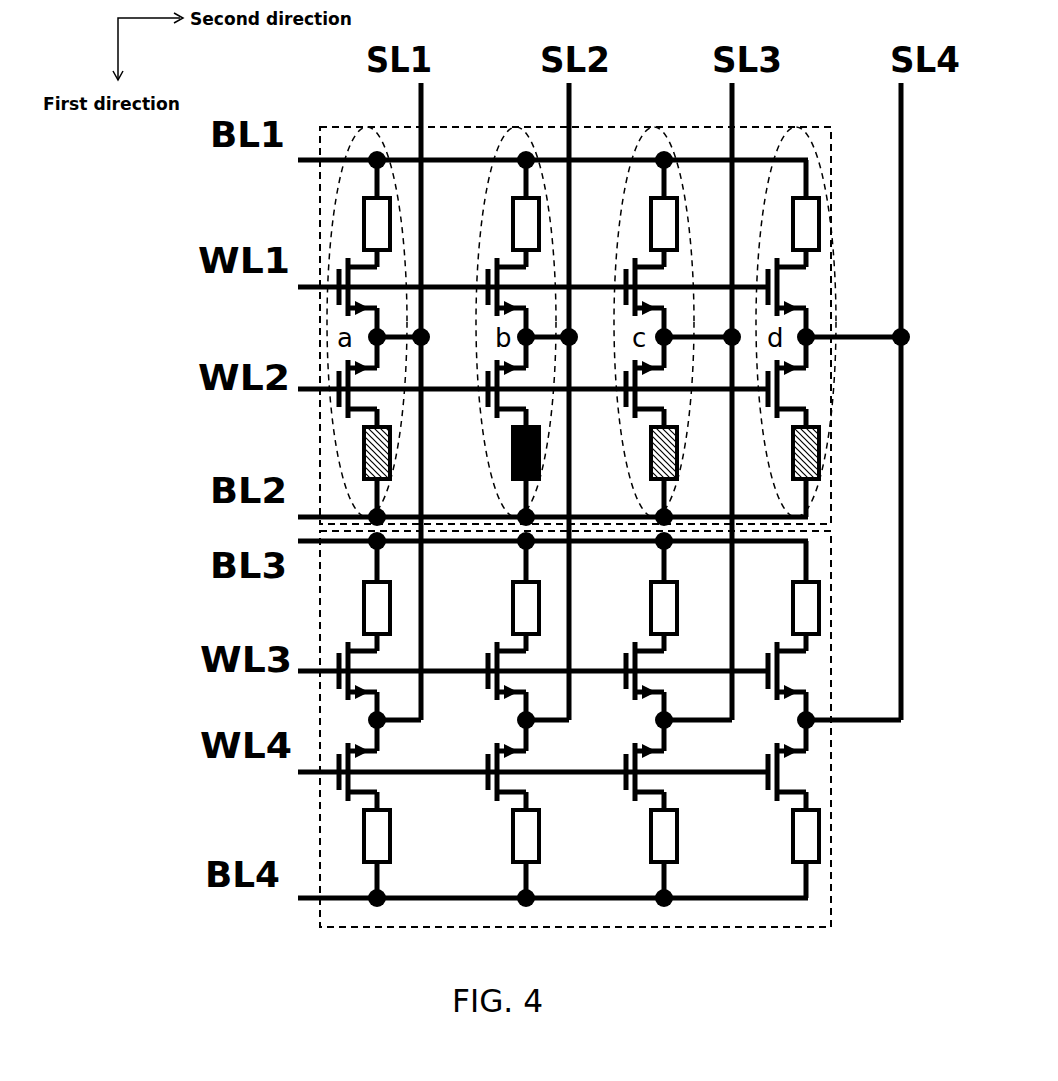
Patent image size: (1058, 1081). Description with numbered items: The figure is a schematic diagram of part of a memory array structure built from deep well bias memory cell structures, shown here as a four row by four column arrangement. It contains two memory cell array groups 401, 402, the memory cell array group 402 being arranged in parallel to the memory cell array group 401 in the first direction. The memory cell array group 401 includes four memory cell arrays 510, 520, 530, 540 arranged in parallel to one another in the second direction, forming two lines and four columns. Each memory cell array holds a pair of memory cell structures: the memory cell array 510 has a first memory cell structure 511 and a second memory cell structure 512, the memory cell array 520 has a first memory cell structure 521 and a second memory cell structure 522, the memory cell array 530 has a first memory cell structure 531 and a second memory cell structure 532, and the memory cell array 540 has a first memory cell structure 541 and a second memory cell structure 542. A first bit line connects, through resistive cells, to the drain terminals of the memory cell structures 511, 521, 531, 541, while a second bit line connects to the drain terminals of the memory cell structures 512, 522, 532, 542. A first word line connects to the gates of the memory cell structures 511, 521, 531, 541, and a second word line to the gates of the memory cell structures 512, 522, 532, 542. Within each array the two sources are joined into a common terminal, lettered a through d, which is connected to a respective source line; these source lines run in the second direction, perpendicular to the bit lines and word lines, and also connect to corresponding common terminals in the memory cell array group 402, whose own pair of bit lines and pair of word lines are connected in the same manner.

The memory cell array group 401 is at (320, 327).
The memory cell array group 402 is at (320, 703).
The memory cell array 510 is at (339, 297).
The memory cell array 520 is at (494, 301).
The memory cell array 530 is at (634, 301).
The memory cell array 540 is at (802, 294).
The first memory cell structure 511 is at (331, 224).
The second memory cell structure 512 is at (331, 453).
The first memory cell structure 521 is at (485, 224).
The second memory cell structure 522 is at (485, 453).
The first memory cell structure 531 is at (628, 224).
The second memory cell structure 532 is at (630, 453).
The first memory cell structure 541 is at (782, 224).
The second memory cell structure 542 is at (779, 453).